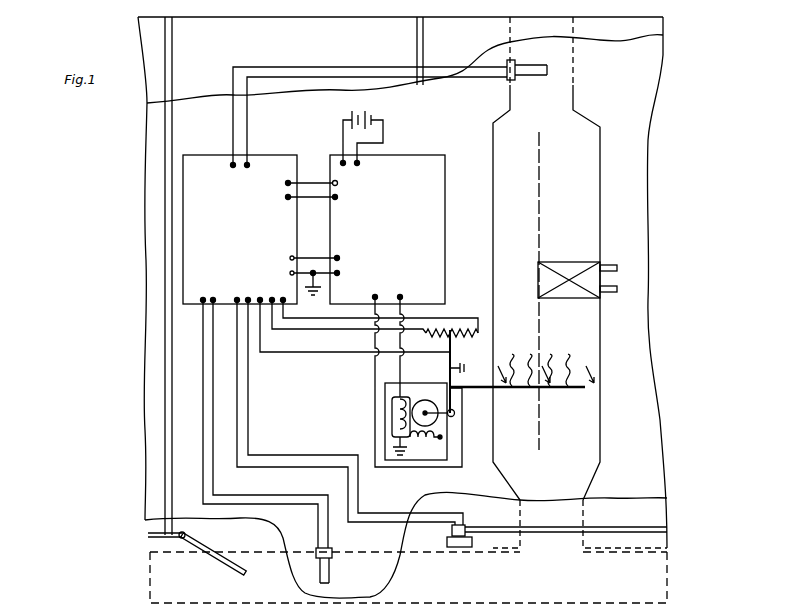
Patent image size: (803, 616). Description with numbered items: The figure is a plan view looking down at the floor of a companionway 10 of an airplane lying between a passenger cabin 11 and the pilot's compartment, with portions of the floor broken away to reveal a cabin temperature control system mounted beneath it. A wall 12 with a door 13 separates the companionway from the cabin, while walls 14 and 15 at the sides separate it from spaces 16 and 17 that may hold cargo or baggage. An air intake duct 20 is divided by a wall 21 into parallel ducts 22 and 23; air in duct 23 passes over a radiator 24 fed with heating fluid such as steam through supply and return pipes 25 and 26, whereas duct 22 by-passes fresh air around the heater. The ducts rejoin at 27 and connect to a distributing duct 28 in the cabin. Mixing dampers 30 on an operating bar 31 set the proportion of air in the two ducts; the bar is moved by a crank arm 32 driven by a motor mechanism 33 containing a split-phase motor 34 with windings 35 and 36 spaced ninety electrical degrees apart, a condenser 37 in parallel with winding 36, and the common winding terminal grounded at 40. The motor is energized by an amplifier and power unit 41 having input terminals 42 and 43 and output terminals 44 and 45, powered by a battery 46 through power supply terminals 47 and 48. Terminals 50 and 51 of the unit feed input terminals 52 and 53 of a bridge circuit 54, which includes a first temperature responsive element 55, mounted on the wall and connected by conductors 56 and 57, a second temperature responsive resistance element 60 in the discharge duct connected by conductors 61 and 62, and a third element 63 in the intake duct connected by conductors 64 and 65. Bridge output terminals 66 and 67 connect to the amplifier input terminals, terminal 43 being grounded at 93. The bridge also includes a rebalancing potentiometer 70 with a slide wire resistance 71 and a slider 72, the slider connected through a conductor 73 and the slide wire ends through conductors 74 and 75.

The companionway 10 is at (205, 52).
The passenger cabin 11 is at (490, 533).
The wall 12 is at (160, 540).
The door 13 is at (221, 553).
The wall 14 is at (172, 77).
The wall 15 is at (417, 41).
The space 16 is at (145, 52).
The space 17 is at (439, 41).
The air intake duct 20 is at (575, 65).
The wall 21 is at (532, 140).
The duct 22 is at (506, 173).
The duct 23 is at (560, 173).
The radiator 24 is at (572, 298).
The supply pipe 25 is at (605, 266).
The return pipe 26 is at (609, 290).
The rejoining point 27 is at (538, 486).
The distributing duct 28 is at (493, 602).
The mixing dampers 30 is at (545, 360).
The operating bar 31 is at (473, 387).
The crank arm 32 is at (462, 402).
The motor mechanism 33 is at (463, 443).
The split-phase motor 34 is at (428, 384).
The winding 35 is at (425, 439).
The winding 36 is at (424, 399).
The condenser 37 is at (392, 417).
The ground 40 is at (400, 458).
The amplifier and power unit 41 is at (446, 214).
The input terminal 42 is at (339, 273).
The input terminal 43 is at (326, 291).
The output terminal 44 is at (375, 296).
The output terminal 45 is at (401, 296).
The battery 46 is at (380, 112).
The power supply terminal 47 is at (341, 164).
The power supply terminal 48 is at (360, 163).
The terminal 50 is at (338, 182).
The terminal 51 is at (338, 197).
The input terminal 52 is at (286, 183).
The input terminal 53 is at (286, 197).
The bridge circuit 54 is at (307, 225).
The first temperature responsive element 55 is at (466, 548).
The conductor 56 is at (317, 469).
The conductor 57 is at (326, 455).
The second temperature responsive resistance element 60 is at (330, 573).
The conductor 61 is at (329, 530).
The conductor 62 is at (318, 530).
The third temperature responsive resistance element 63 is at (532, 74).
The conductor 64 is at (248, 124).
The conductor 65 is at (233, 124).
The output terminal 66 is at (290, 258).
The output terminal 67 is at (290, 273).
The rebalancing potentiometer 70 is at (468, 302).
The slide wire resistance 71 is at (471, 335).
The slider 72 is at (452, 350).
The conductor 73 is at (345, 354).
The conductor 74 is at (336, 331).
The conductor 75 is at (326, 320).
The ground 93 is at (312, 299).